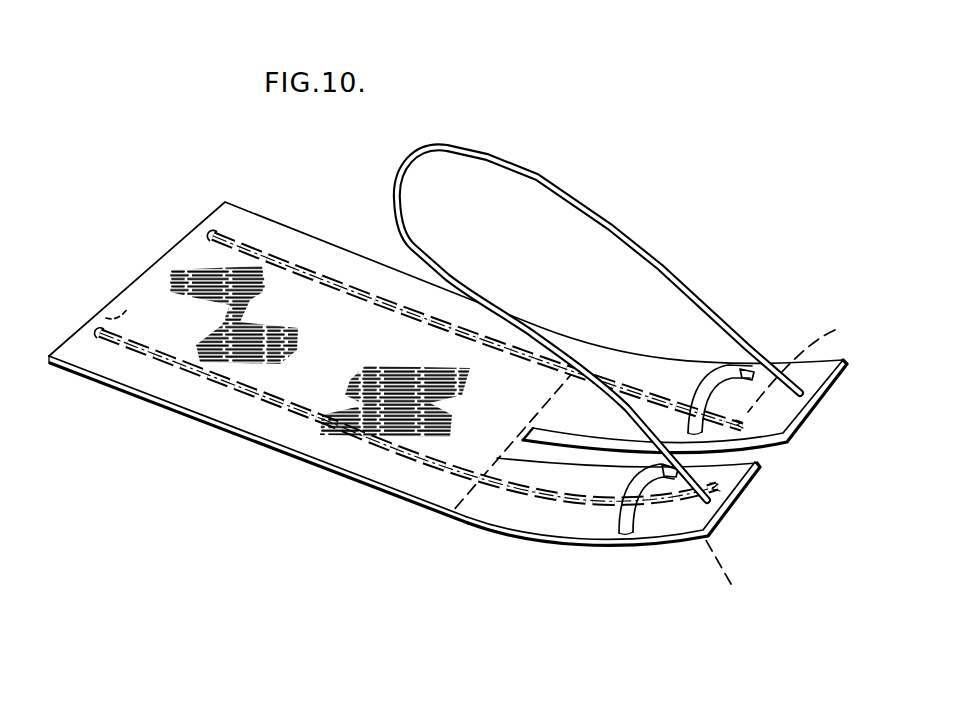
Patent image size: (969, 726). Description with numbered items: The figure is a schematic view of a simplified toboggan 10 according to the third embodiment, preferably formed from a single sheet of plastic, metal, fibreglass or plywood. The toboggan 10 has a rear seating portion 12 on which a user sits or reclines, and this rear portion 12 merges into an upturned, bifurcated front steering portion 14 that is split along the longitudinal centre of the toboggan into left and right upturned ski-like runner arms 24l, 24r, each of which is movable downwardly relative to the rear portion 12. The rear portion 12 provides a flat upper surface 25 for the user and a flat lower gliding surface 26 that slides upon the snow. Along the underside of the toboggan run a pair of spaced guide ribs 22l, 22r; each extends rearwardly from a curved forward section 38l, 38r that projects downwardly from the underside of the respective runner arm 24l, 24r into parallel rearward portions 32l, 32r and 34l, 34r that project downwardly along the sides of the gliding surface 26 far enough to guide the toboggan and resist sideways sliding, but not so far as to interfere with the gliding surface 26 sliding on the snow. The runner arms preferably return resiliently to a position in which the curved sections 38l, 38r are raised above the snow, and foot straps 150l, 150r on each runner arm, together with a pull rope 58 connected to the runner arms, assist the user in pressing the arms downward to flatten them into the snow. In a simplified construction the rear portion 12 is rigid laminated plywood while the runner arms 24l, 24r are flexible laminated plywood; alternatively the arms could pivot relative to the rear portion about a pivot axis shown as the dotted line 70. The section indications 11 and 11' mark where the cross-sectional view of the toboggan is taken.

The toboggan 10 is at (192, 190).
The rear seating portion 12 is at (398, 552).
The front steering portion 14 is at (617, 635).
The left guide rib 22l is at (432, 312).
The right guide rib 22r is at (350, 440).
The left upturned runner arm 24l is at (815, 421).
The right upturned runner arm 24r is at (746, 510).
The upper surface 25 is at (159, 288).
The gliding surface 26 is at (102, 311).
The left rearward rib portion 32l is at (635, 395).
The right rearward rib portion 32r is at (573, 490).
The left rearward rib portion 34l is at (276, 262).
The right rearward rib portion 34r is at (184, 356).
The left curved forward section 38l is at (816, 357).
The right curved forward section 38r is at (742, 573).
The pull rope 58 is at (570, 195).
The pivot axis 70 is at (545, 405).
The left foot strap 150l is at (738, 374).
The right foot strap 150r is at (641, 512).
The section line 11 is at (342, 212).
The section line 11' is at (115, 423).